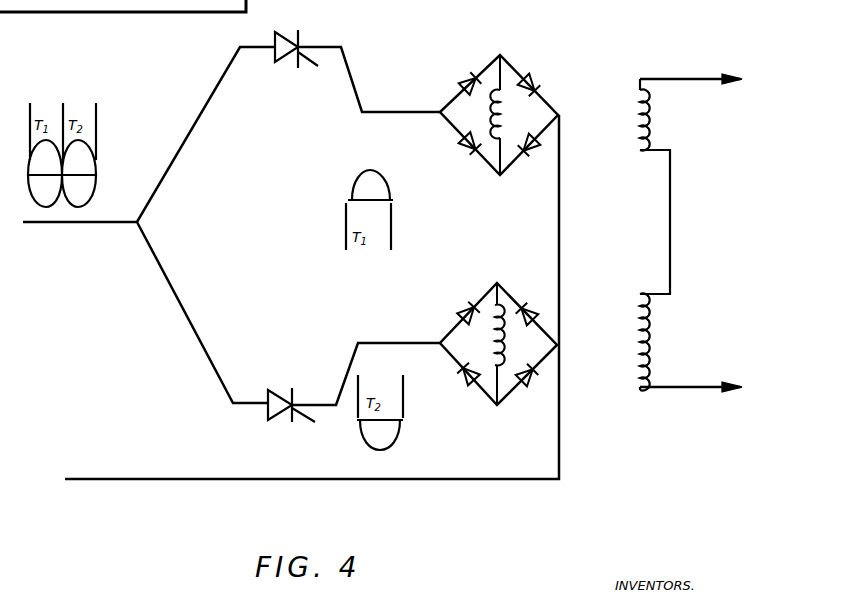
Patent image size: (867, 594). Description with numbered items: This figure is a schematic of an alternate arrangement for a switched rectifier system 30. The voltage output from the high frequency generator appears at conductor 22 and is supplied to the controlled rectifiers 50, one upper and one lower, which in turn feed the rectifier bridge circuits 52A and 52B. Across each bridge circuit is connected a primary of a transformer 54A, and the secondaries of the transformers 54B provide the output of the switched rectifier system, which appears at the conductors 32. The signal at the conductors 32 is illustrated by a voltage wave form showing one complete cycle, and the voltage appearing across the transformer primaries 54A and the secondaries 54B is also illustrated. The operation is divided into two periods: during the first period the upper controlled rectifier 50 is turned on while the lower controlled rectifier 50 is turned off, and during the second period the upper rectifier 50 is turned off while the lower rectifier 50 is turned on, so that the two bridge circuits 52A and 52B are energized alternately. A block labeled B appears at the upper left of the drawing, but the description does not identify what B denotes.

The conductor 22 is at (98, 222).
The switched rectifier system 30 is at (163, 502).
The conductors 32 is at (697, 78).
The controlled rectifiers 50 is at (285, 30).
The rectifier bridge circuit 52A is at (517, 57).
The rectifier bridge circuit 52B is at (476, 293).
The transformer primary 54A is at (490, 115).
The transformer secondary 54B is at (652, 126).
The block B is at (45, 2).